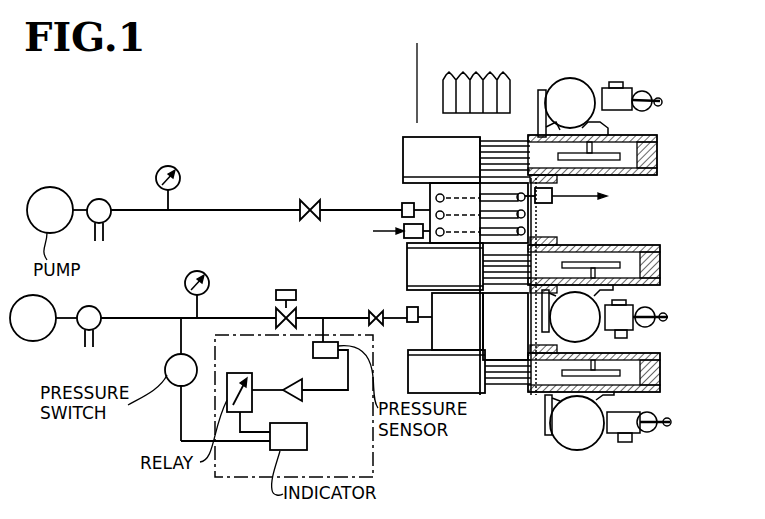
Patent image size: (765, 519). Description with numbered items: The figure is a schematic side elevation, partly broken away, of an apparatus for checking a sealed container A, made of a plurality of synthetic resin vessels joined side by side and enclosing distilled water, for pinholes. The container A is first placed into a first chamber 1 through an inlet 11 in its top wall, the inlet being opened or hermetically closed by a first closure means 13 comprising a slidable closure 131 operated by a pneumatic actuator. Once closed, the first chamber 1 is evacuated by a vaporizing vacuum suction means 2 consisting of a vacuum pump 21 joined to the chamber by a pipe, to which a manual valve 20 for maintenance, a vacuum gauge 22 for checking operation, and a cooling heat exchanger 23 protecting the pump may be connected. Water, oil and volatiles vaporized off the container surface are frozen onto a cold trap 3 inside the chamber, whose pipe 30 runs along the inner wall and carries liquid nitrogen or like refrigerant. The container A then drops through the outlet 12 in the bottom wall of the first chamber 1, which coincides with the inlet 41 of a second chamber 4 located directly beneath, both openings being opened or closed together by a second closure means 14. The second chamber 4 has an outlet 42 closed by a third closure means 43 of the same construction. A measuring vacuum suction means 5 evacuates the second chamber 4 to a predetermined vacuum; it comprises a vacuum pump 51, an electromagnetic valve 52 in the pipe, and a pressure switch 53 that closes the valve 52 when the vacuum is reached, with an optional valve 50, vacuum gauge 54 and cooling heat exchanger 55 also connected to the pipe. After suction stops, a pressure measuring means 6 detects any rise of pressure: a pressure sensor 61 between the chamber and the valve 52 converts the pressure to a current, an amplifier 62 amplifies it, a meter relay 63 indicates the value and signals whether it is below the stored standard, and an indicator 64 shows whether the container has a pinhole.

The first chamber 1 is at (538, 240).
The vaporizing vacuum suction means 2 is at (202, 158).
The cold trap 3 is at (532, 213).
The second chamber 4 is at (512, 342).
The measuring vacuum suction means 5 is at (134, 423).
The pressure measuring means 6 is at (373, 458).
The inlet 11 is at (500, 140).
The outlet 12 is at (495, 246).
The first closure means 13 is at (588, 88).
The second closure means 14 is at (594, 336).
The manual valve 20 is at (307, 197).
The vacuum pump 21 is at (46, 195).
The vacuum gauge 22 is at (165, 167).
The cooling heat exchanger 23 is at (99, 199).
The pipe 30 is at (492, 195).
The inlet 41 is at (497, 285).
The outlet 42 is at (498, 392).
The third closure means 43 is at (587, 447).
The valve 50 is at (376, 306).
The vacuum pump 51 is at (40, 341).
The electromagnetic valve 52 is at (285, 290).
The pressure switch 53 is at (166, 367).
The vacuum gauge 54 is at (199, 271).
The cooling heat exchanger 55 is at (97, 306).
The pressure sensor 61 is at (316, 349).
The amplifier 62 is at (300, 394).
The meter relay 63 is at (229, 379).
The indicator 64 is at (308, 437).
The closure 131 is at (658, 155).
The sealed container A is at (511, 93).